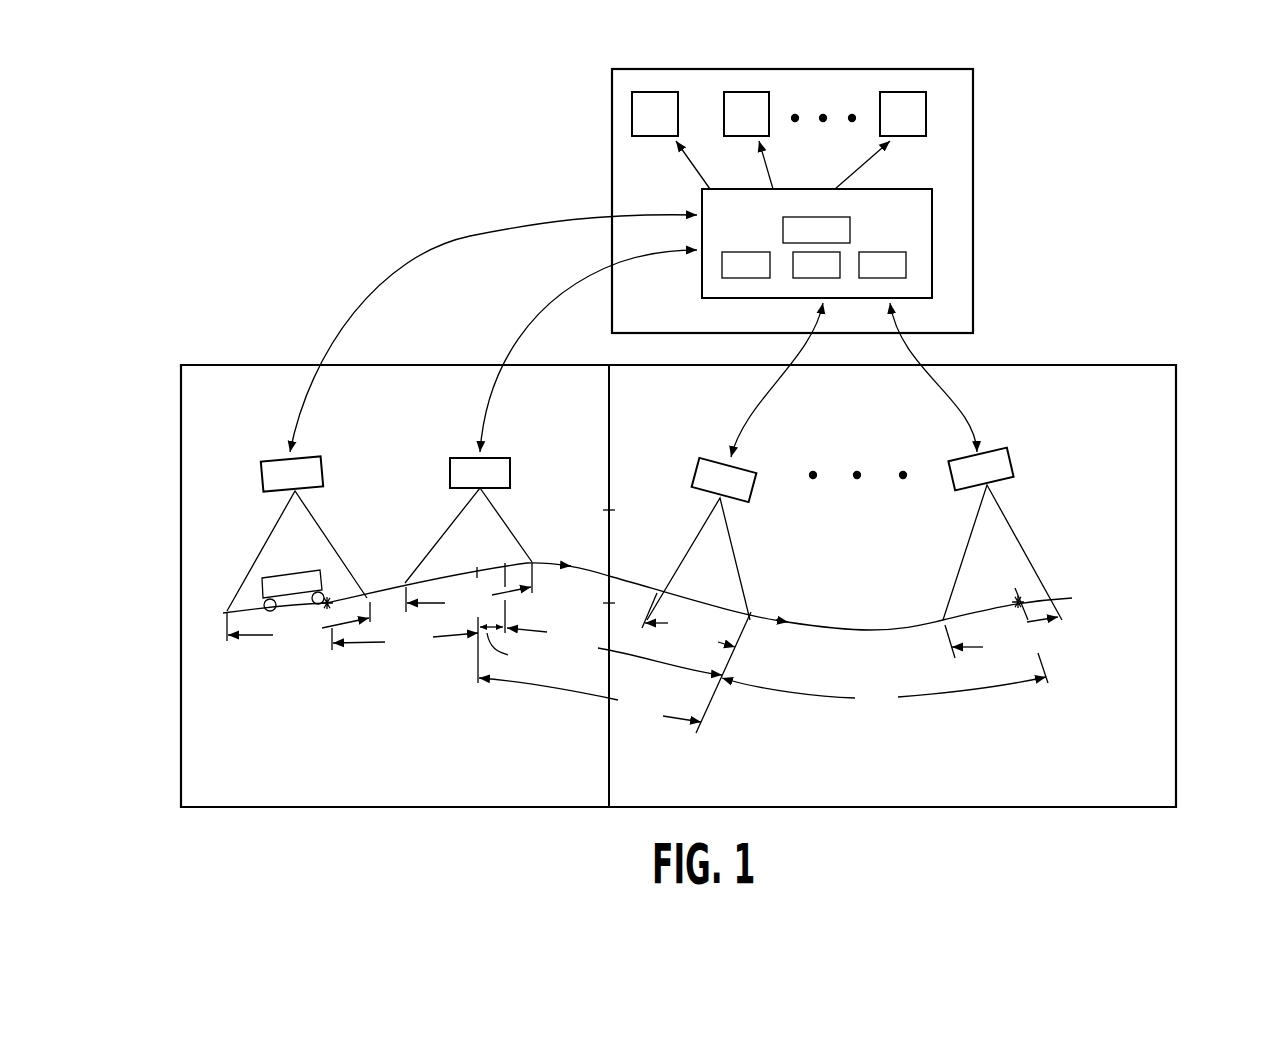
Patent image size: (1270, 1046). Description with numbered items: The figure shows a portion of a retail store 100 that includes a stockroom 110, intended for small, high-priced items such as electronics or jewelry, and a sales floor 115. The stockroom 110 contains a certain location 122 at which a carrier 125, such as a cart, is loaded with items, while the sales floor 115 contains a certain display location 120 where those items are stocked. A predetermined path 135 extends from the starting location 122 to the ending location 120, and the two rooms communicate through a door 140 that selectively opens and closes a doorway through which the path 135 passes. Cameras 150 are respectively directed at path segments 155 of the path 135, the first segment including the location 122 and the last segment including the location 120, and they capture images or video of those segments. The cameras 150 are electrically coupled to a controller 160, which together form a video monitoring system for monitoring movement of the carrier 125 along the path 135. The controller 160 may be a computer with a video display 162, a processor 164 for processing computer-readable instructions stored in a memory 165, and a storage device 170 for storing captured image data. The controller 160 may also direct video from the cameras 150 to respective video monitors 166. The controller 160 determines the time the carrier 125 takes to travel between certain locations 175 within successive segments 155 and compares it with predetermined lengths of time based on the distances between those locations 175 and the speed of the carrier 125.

The retail store 100 is at (717, 415).
The stockroom 110 is at (395, 586).
The sales floor 115 is at (892, 586).
The location 120 is at (1040, 573).
The location 122 is at (346, 562).
The carrier 125 is at (268, 567).
The path 135 is at (647, 596).
The door 140 is at (638, 586).
The cameras 150 is at (636, 524).
The path segments 155 is at (642, 610).
The controller 160 is at (817, 243).
The video display 162 is at (816, 231).
The processor 164 is at (882, 266).
The memory 165 is at (816, 266).
The video monitors 166 is at (777, 106).
The storage device 170 is at (746, 266).
The locations 175 is at (724, 556).